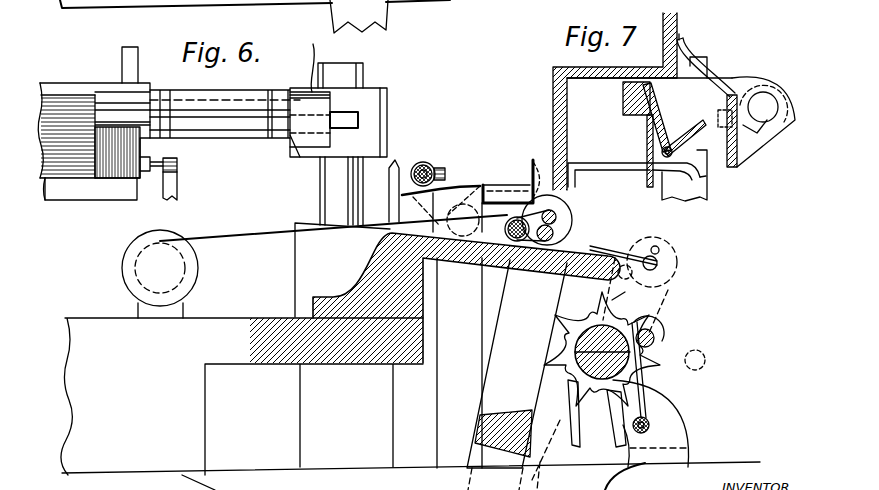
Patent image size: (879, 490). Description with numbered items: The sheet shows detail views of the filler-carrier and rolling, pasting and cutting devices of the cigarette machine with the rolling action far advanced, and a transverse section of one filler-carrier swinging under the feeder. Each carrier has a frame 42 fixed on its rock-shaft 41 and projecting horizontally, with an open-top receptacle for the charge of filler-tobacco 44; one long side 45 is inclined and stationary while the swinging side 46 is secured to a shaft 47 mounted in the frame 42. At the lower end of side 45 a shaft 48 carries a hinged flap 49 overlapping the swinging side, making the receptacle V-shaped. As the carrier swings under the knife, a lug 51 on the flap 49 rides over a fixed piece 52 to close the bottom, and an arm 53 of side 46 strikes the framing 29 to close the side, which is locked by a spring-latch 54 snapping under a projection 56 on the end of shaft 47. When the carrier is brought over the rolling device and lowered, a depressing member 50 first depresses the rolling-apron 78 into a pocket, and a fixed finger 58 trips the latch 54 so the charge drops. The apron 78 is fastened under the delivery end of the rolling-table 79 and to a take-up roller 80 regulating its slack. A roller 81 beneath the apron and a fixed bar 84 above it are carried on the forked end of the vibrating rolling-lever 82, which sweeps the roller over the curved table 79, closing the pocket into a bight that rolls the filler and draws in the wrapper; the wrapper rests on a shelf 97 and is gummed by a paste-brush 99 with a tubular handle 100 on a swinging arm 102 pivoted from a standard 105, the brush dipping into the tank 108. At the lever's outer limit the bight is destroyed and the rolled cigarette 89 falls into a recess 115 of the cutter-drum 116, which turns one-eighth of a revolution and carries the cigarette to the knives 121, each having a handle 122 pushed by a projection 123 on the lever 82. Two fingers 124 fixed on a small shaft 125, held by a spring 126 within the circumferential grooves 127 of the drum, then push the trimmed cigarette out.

In FIG. 7, the side pieces of the framing 29 is at (681, 38).
In FIG. 6, the rock-shaft 41 is at (364, 72).
In FIG. 7, the rock-shaft 41 is at (708, 60).
In FIG. 6, the frame 42 is at (306, 150).
In FIG. 7, the frame 42 is at (624, 108).
In FIG. 7, the charge of filler-tobacco 44 is at (668, 147).
In FIG. 7, the long side of the receptacle 45 is at (661, 102).
In FIG. 6, the swinging side 46 is at (78, 175).
In FIG. 7, the swinging side 46 is at (742, 166).
In FIG. 6, the shaft 47 is at (116, 108).
In FIG. 7, the shaft 47 is at (765, 92).
In FIG. 6, the shaft 48 is at (205, 91).
In FIG. 7, the hinged flap 49 is at (684, 132).
In FIG. 6, the depressing member 50 is at (120, 192).
In FIG. 7, the depressing member 50 is at (628, 171).
In FIG. 6, the lug 51 is at (178, 165).
In FIG. 7, the lug 51 is at (705, 171).
In FIG. 6, the fixed piece 52 is at (178, 190).
In FIG. 7, the fixed piece 52 is at (684, 175).
In FIG. 6, the arm 53 is at (120, 60).
In FIG. 7, the arm 53 is at (687, 48).
In FIG. 6, the spring-latch 54 is at (359, 120).
In FIG. 6, the projection 56 is at (305, 60).
In FIG. 6, the fixed finger 58 is at (389, 186).
In FIG. 6, the rolling-apron 78 is at (236, 238).
In FIG. 6, the rolling-table 79 is at (470, 258).
In FIG. 6, the take-up roller 80 is at (122, 273).
In FIG. 6, the roller 81 is at (554, 233).
In FIG. 6, the rolling-lever 82 is at (517, 375).
In FIG. 6, the fixed bar 84 is at (553, 216).
In FIG. 6, the rolled cigarette 89 is at (715, 358).
In FIG. 6, the shelf 97 is at (440, 198).
In FIG. 6, the paste-brush 99 is at (437, 172).
In FIG. 6, the tubular handle 100 is at (426, 162).
In FIG. 6, the swinging arm 102 is at (418, 165).
In FIG. 6, the standard 105 is at (441, 382).
In FIG. 6, the tank 108 is at (533, 160).
In FIG. 6, the recess 115 is at (624, 303).
In FIG. 6, the cutter-drum 116 is at (545, 366).
In FIG. 6, the knives 121 is at (656, 337).
In FIG. 6, the handle 122 is at (583, 438).
In FIG. 6, the projection 123 is at (540, 410).
In FIG. 6, the fingers 124 is at (648, 398).
In FIG. 6, the small shaft 125 is at (652, 430).
In FIG. 6, the spring 126 is at (647, 435).
In FIG. 6, the circumferential grooves 127 is at (548, 352).